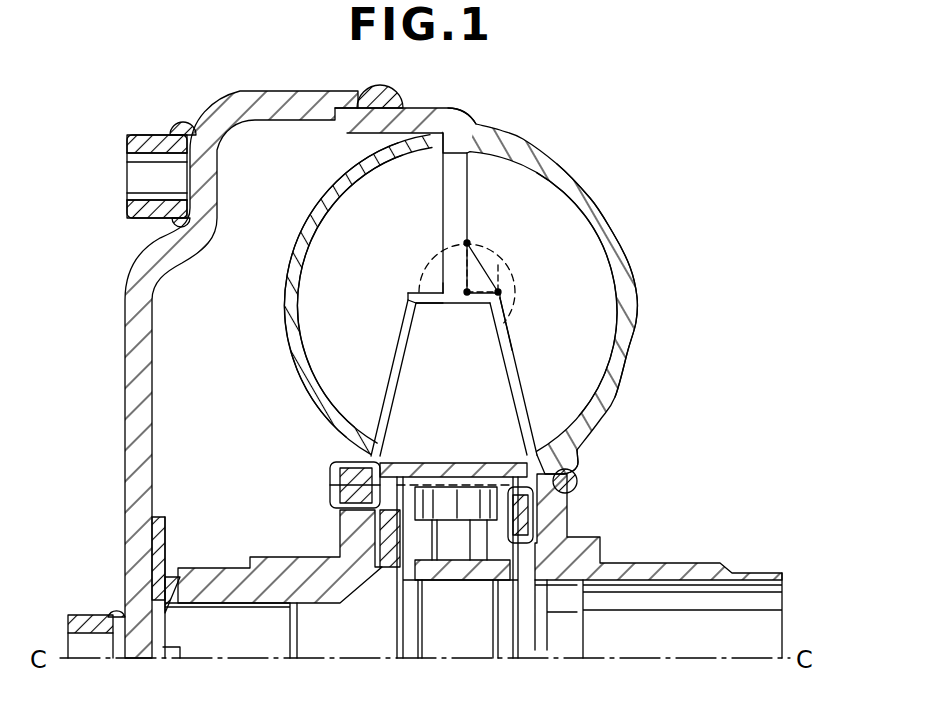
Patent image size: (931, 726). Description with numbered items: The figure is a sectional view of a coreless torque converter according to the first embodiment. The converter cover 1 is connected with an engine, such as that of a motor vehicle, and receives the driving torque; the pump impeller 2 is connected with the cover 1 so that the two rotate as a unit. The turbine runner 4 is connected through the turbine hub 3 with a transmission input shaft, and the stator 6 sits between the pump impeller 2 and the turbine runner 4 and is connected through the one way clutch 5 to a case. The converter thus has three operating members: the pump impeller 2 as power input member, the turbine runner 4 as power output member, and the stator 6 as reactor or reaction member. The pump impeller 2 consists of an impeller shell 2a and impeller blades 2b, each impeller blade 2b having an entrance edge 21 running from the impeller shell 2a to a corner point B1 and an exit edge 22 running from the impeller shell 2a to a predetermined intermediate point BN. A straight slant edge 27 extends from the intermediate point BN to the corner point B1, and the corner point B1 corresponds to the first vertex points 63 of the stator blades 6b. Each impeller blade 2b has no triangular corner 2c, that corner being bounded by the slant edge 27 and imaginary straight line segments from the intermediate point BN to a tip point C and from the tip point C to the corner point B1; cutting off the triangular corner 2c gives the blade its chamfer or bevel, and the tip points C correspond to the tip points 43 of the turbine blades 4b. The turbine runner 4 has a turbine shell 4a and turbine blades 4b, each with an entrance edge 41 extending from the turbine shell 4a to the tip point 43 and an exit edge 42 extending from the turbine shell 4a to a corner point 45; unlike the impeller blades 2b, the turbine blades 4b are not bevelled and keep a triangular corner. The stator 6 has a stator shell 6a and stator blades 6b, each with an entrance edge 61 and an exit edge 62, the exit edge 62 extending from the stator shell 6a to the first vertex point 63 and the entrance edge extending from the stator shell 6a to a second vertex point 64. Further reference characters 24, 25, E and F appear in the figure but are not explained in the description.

The converter cover 1 is at (232, 110).
The pump impeller 2 is at (600, 250).
The impeller shell 2a is at (620, 290).
The impeller blades 2b is at (633, 350).
The triangular corner 2c is at (468, 312).
The turbine hub 3 is at (272, 555).
The turbine runner 4 is at (305, 283).
The turbine shell 4a is at (320, 205).
The turbine blades 4b is at (325, 258).
The one way clutch 5 is at (470, 533).
The stator 6 is at (510, 422).
The stator shell 6a is at (345, 455).
The stator blades 6b is at (352, 442).
The entrance edge 21 is at (520, 392).
The exit edge 22 is at (462, 188).
The foot 24 is at (575, 440).
The junction 25 is at (472, 150).
The slant edge 27 is at (497, 266).
The entrance edge 41 is at (438, 170).
The exit edge 42 is at (392, 362).
The tip point 43 is at (440, 290).
The corner point 45 is at (443, 283).
The entrance edge 61 is at (392, 408).
The exit edge 62 is at (512, 375).
The first vertex point 63 is at (505, 315).
The second vertex point 64 is at (416, 312).
The intermediate point BN is at (472, 246).
The corner point B1 is at (520, 298).
The tip point C is at (467, 297).
The point E is at (485, 316).
The point F is at (450, 265).